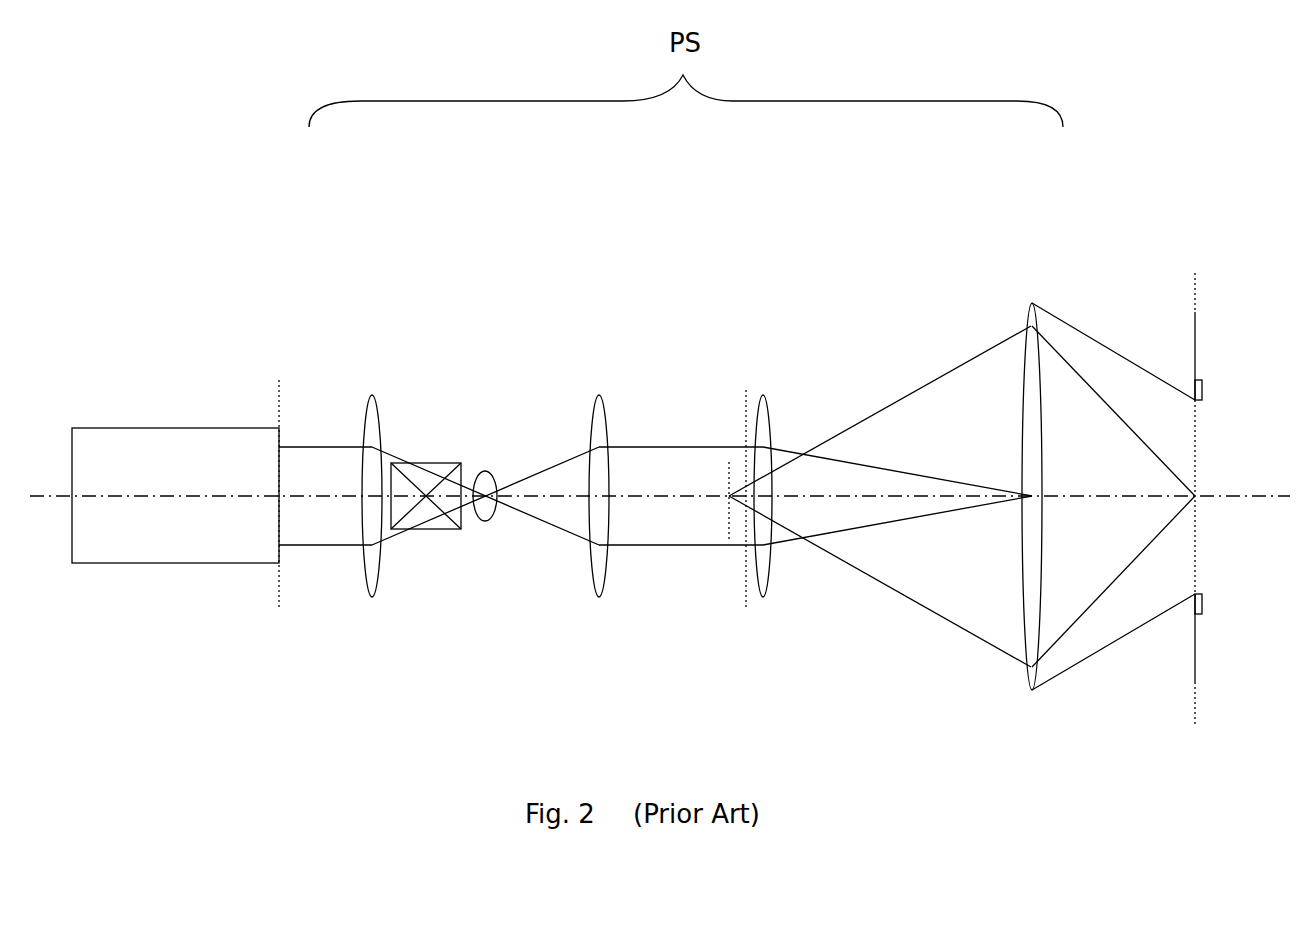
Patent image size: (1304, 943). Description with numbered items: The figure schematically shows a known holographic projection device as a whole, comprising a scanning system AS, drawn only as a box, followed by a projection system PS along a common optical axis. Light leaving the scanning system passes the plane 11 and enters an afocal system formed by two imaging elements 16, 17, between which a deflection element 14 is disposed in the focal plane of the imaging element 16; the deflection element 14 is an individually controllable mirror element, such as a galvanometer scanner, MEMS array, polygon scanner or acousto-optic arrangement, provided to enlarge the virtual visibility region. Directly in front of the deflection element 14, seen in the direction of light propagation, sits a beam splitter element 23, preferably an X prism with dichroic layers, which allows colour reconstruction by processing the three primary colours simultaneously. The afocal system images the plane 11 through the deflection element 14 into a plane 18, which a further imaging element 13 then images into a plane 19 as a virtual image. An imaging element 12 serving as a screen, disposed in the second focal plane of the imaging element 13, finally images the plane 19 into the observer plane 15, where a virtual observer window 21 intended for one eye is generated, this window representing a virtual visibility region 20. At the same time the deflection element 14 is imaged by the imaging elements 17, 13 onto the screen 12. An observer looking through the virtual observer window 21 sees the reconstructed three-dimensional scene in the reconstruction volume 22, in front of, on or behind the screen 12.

The plane 11 is at (279, 390).
The imaging element 12 is at (1029, 305).
The imaging element 13 is at (765, 397).
The deflection element 14 is at (483, 516).
The observer plane 15 is at (1195, 273).
The imaging element 16 is at (371, 396).
The imaging element 17 is at (597, 397).
The plane 18 is at (746, 392).
The plane 19 is at (729, 462).
The virtual visibility region 20 is at (1245, 381).
The virtual observer window 21 is at (1195, 560).
The reconstruction volume 22 is at (1099, 355).
The beam splitter element 23 is at (442, 463).